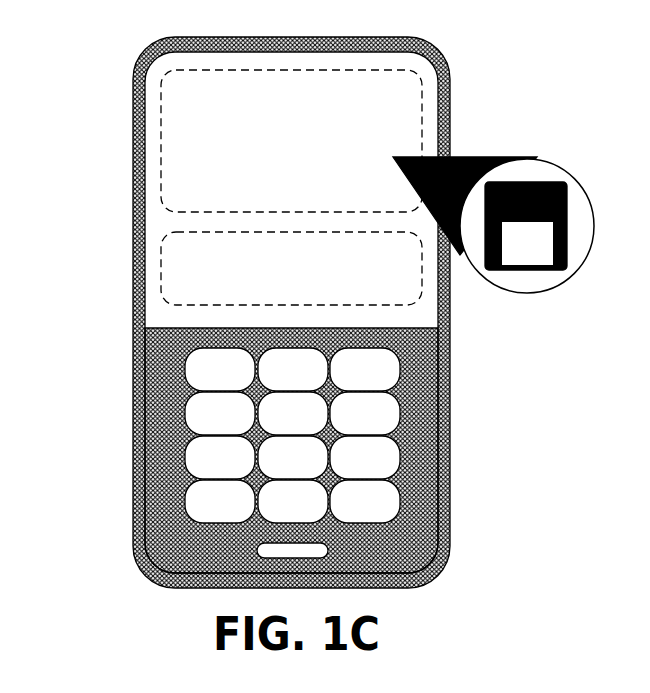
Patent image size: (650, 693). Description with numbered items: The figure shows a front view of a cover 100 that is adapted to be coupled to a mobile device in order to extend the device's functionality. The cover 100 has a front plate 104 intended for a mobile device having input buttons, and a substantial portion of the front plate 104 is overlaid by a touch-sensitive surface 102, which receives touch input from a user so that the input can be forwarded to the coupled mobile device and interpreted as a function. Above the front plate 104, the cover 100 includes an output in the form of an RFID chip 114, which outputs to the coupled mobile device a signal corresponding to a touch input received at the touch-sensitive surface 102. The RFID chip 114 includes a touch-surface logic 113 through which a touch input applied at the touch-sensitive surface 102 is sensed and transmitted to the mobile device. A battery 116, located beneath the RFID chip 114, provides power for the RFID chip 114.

The cover 100 is at (308, 326).
The touch-sensitive surface 102 is at (347, 472).
The front plate 104 is at (240, 312).
The touch-surface logic 113 is at (493, 225).
The RFID chip 114 is at (359, 131).
The battery 116 is at (359, 290).